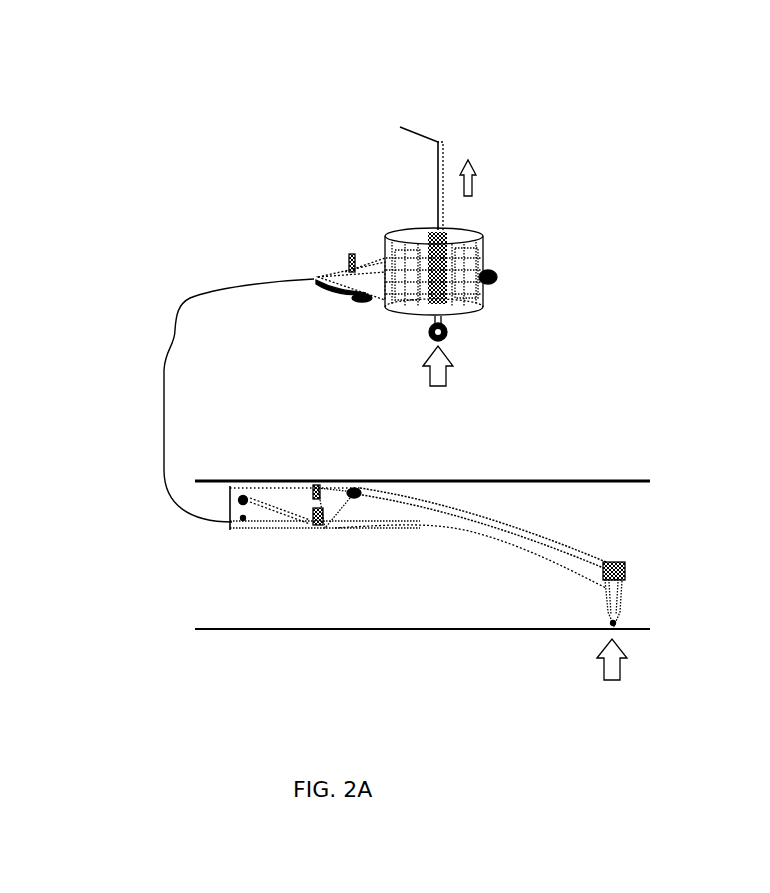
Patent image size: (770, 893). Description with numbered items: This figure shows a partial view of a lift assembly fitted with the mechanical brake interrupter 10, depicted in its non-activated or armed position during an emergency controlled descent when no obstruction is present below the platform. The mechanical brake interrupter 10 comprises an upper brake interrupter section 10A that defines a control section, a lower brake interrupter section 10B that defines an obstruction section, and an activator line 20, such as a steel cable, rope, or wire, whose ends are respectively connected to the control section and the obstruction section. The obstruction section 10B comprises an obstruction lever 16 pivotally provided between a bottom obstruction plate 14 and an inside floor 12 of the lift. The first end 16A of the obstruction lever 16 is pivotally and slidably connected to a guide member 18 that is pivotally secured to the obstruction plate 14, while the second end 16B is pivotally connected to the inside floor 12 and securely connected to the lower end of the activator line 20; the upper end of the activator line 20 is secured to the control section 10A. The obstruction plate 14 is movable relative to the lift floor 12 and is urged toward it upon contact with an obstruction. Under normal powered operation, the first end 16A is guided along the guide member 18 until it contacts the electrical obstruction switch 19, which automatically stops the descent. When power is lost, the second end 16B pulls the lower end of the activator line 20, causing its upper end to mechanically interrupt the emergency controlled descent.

The mechanical brake interrupter 10 is at (205, 220).
The upper brake interrupter section 10A is at (536, 264).
The lower brake interrupter section 10B is at (646, 516).
The inside floor 12 is at (548, 478).
The bottom obstruction plate 14 is at (250, 634).
The obstruction lever 16 is at (478, 532).
The first end 16A is at (628, 565).
The second end 16B is at (332, 530).
The guide member 18 is at (592, 620).
The electrical obstruction switch 19 is at (635, 632).
The activator line 20 is at (164, 372).